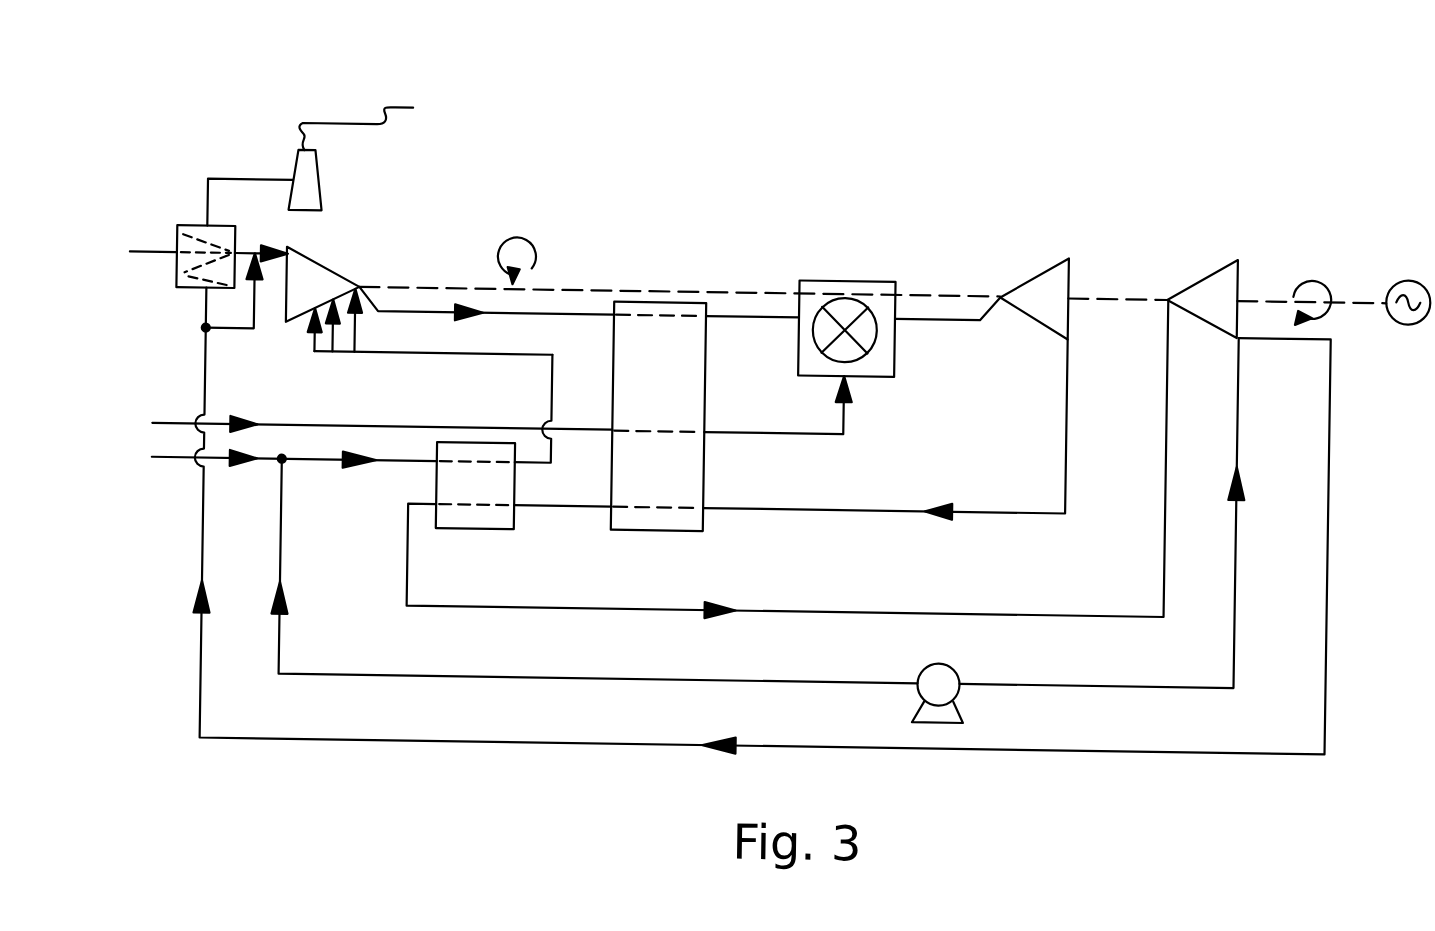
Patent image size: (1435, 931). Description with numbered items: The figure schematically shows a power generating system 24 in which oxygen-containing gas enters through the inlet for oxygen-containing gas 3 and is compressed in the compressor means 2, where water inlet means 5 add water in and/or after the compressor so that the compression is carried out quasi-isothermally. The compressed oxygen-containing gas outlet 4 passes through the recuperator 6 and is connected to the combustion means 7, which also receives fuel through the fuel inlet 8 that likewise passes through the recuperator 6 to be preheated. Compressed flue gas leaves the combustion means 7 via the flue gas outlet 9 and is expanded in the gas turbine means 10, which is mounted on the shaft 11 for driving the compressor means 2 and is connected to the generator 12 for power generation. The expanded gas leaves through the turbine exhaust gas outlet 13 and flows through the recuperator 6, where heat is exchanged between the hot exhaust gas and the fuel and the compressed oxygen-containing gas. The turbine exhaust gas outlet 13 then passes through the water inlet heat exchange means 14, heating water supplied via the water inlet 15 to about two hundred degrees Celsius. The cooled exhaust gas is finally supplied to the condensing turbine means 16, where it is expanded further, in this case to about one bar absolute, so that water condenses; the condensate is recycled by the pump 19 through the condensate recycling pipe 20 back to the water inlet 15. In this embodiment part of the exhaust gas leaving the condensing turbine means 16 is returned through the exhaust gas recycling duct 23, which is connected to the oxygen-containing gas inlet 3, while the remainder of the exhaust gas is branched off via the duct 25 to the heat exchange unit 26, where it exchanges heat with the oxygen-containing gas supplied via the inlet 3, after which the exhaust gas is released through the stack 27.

The compressor means 2 is at (327, 270).
The inlet for oxygen-containing gas 3 is at (247, 260).
The outlet for compressed oxygen-containing gas 4 is at (395, 316).
The water inlet means 5 is at (366, 378).
The recuperator 6 is at (704, 385).
The combustion means 7 is at (876, 374).
The fuel inlet 8 is at (300, 431).
The flue gas outlet 9 is at (931, 316).
The gas turbine means 10 is at (1013, 305).
The shaft 11 is at (927, 292).
The generator 12 is at (1410, 270).
The turbine exhaust gas outlet 13 is at (1066, 462).
The water inlet heat exchange means 14 is at (445, 532).
The water inlet 15 is at (263, 465).
The condensing turbine means 16 is at (1200, 268).
The pump 19 is at (949, 665).
The condensate recycling pipe 20 is at (524, 680).
The exhaust gas recycling duct 23 is at (232, 335).
The power generating system 24 is at (700, 244).
The duct 25 is at (257, 186).
The heat exchange unit 26 is at (195, 233).
The stack 27 is at (320, 208).